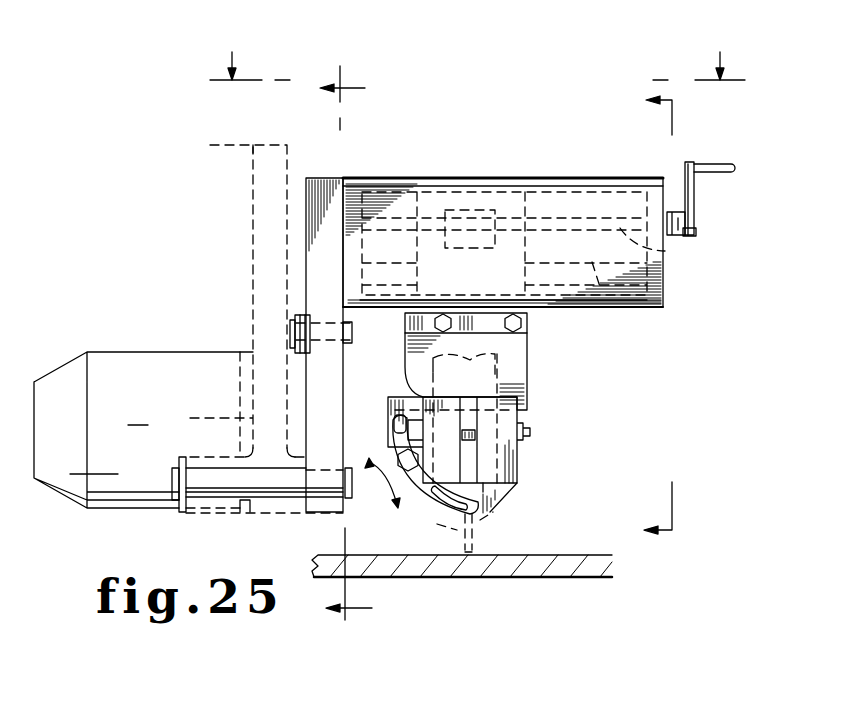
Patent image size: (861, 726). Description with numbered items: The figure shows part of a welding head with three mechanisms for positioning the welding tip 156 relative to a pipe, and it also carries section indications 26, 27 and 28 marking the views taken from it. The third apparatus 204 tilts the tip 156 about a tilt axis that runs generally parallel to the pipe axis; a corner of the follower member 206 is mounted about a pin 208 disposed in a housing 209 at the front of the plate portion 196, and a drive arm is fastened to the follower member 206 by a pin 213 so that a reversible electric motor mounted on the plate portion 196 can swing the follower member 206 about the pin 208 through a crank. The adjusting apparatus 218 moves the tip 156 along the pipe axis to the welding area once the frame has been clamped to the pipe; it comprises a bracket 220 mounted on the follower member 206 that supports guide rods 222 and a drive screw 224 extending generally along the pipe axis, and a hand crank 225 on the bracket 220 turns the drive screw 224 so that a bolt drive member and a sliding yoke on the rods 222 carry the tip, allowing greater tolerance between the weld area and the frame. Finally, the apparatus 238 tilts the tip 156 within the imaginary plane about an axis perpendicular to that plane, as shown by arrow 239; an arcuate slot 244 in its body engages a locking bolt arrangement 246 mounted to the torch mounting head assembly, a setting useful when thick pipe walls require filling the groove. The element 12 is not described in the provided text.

The table surface 12 is at (462, 577).
The section line 26 is at (477, 53).
The section line 27 is at (360, 343).
The section line 28 is at (642, 316).
The welding tip 156 is at (475, 526).
The plate portion 196 is at (252, 243).
The third apparatus 204 is at (180, 350).
The follower member 206 is at (326, 178).
The pin 208 is at (175, 482).
The housing 209 is at (212, 518).
The pin 213 is at (346, 338).
The apparatus 218 is at (390, 178).
The bracket 220 is at (500, 178).
The guide rods 222 is at (598, 270).
The drive screw 224 is at (665, 251).
The hand crank 225 is at (694, 196).
The apparatus 238 is at (530, 370).
The arrow 239 is at (380, 483).
The arcuate slot 244 is at (399, 428).
The locking bolt arrangement 246 is at (413, 507).